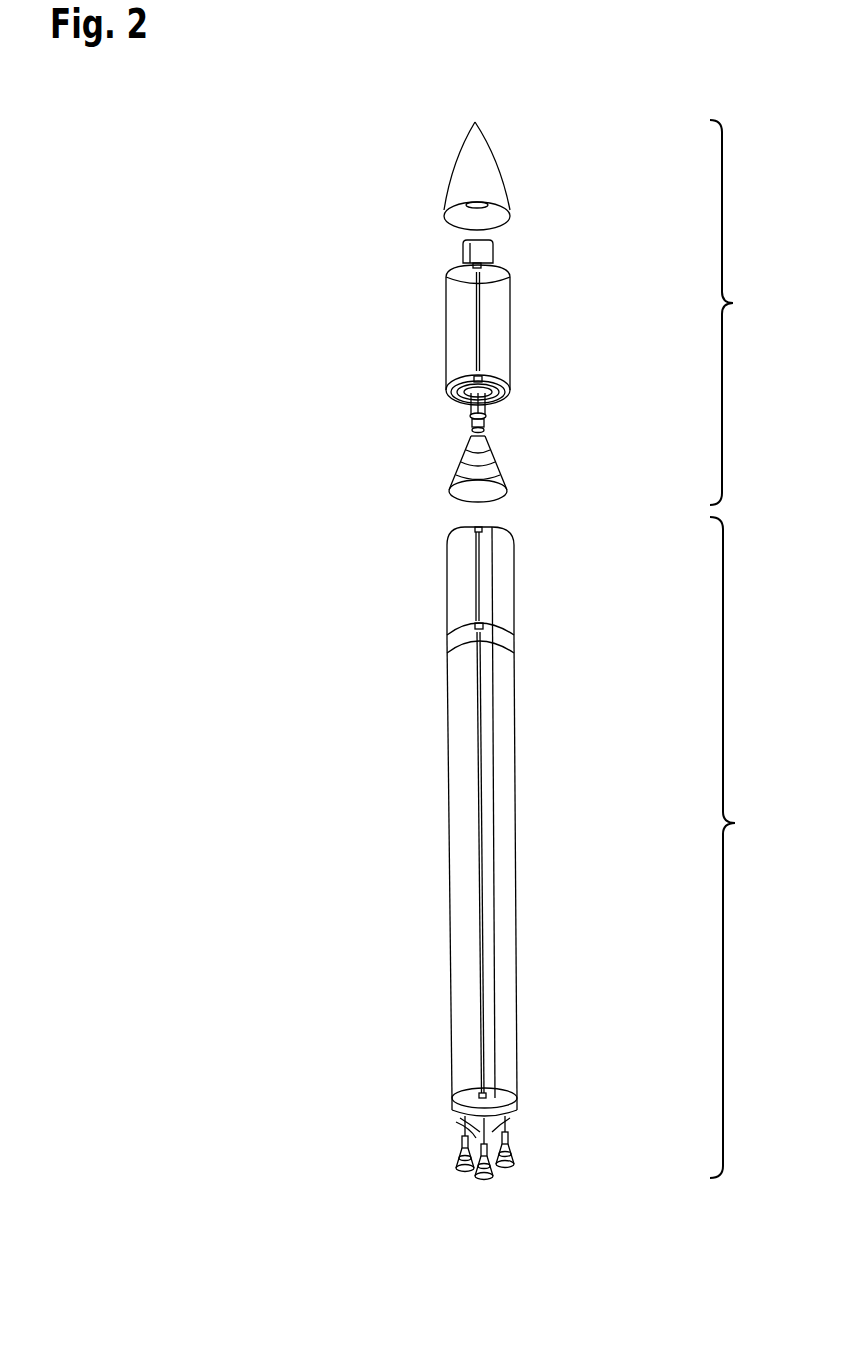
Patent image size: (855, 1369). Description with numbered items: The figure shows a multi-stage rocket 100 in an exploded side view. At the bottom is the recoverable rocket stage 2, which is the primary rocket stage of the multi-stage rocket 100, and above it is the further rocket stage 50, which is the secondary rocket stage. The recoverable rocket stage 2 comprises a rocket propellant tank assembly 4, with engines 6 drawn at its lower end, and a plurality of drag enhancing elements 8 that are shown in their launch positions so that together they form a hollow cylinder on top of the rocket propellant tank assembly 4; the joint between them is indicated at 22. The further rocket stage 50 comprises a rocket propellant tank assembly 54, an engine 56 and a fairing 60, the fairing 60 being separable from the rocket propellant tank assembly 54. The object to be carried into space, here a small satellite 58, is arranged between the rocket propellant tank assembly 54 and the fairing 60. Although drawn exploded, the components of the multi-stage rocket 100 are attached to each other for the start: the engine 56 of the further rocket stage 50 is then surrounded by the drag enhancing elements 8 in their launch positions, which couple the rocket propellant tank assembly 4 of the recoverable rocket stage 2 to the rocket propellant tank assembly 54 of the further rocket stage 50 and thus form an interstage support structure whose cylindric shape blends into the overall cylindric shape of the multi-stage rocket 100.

The multi-stage rocket 100 is at (312, 713).
The recoverable rocket stage 2 is at (736, 847).
The rocket propellant tank assembly 4 is at (463, 768).
The lower stage engines 6 is at (458, 1147).
The drag enhancing elements 8 is at (470, 575).
The intertank joint 22 is at (462, 640).
The further rocket stage 50 is at (741, 312).
The rocket propellant tank assembly 54 is at (460, 310).
The engine 56 is at (473, 432).
The small satellite 58 is at (475, 252).
The fairing 60 is at (468, 177).